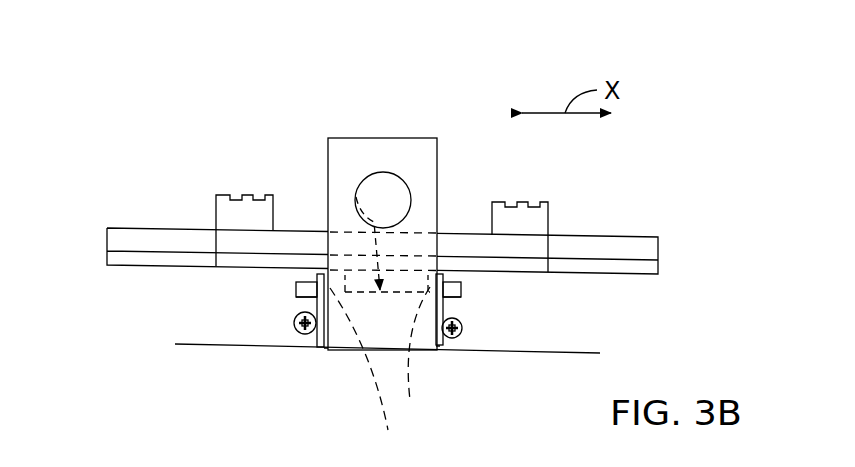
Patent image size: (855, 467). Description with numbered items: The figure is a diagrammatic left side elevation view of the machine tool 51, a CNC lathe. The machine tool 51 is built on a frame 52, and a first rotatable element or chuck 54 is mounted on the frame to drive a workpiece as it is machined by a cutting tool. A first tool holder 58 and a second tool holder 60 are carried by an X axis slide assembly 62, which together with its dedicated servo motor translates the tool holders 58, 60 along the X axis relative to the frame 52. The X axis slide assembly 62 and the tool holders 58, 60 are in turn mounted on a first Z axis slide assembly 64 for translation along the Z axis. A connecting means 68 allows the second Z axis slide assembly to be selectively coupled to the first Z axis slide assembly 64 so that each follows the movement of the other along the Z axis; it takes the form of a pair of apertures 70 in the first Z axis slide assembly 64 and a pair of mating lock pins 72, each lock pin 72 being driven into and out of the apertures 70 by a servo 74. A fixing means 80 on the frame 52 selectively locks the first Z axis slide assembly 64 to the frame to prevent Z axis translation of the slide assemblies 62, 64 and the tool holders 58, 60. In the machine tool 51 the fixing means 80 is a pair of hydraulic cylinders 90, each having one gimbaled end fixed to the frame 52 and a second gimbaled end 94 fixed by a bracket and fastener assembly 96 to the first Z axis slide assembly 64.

The machine tool 51 is at (377, 102).
The frame 52 is at (251, 350).
The first rotatable element or chuck 54 is at (398, 188).
The first tool holder 58 is at (548, 202).
The second tool holder 60 is at (216, 200).
The X axis slide assembly 62 is at (138, 228).
The first Z axis slide assembly 64 is at (352, 192).
The connecting means 68 is at (295, 287).
The apertures 70 is at (384, 370).
The lock pins 72 is at (440, 357).
The servo 74 is at (298, 298).
The fixing means 80 is at (303, 351).
The hydraulic cylinders 90 is at (294, 323).
The second gimbaled end 94 is at (303, 332).
The bracket and fastener assembly 96 is at (316, 345).